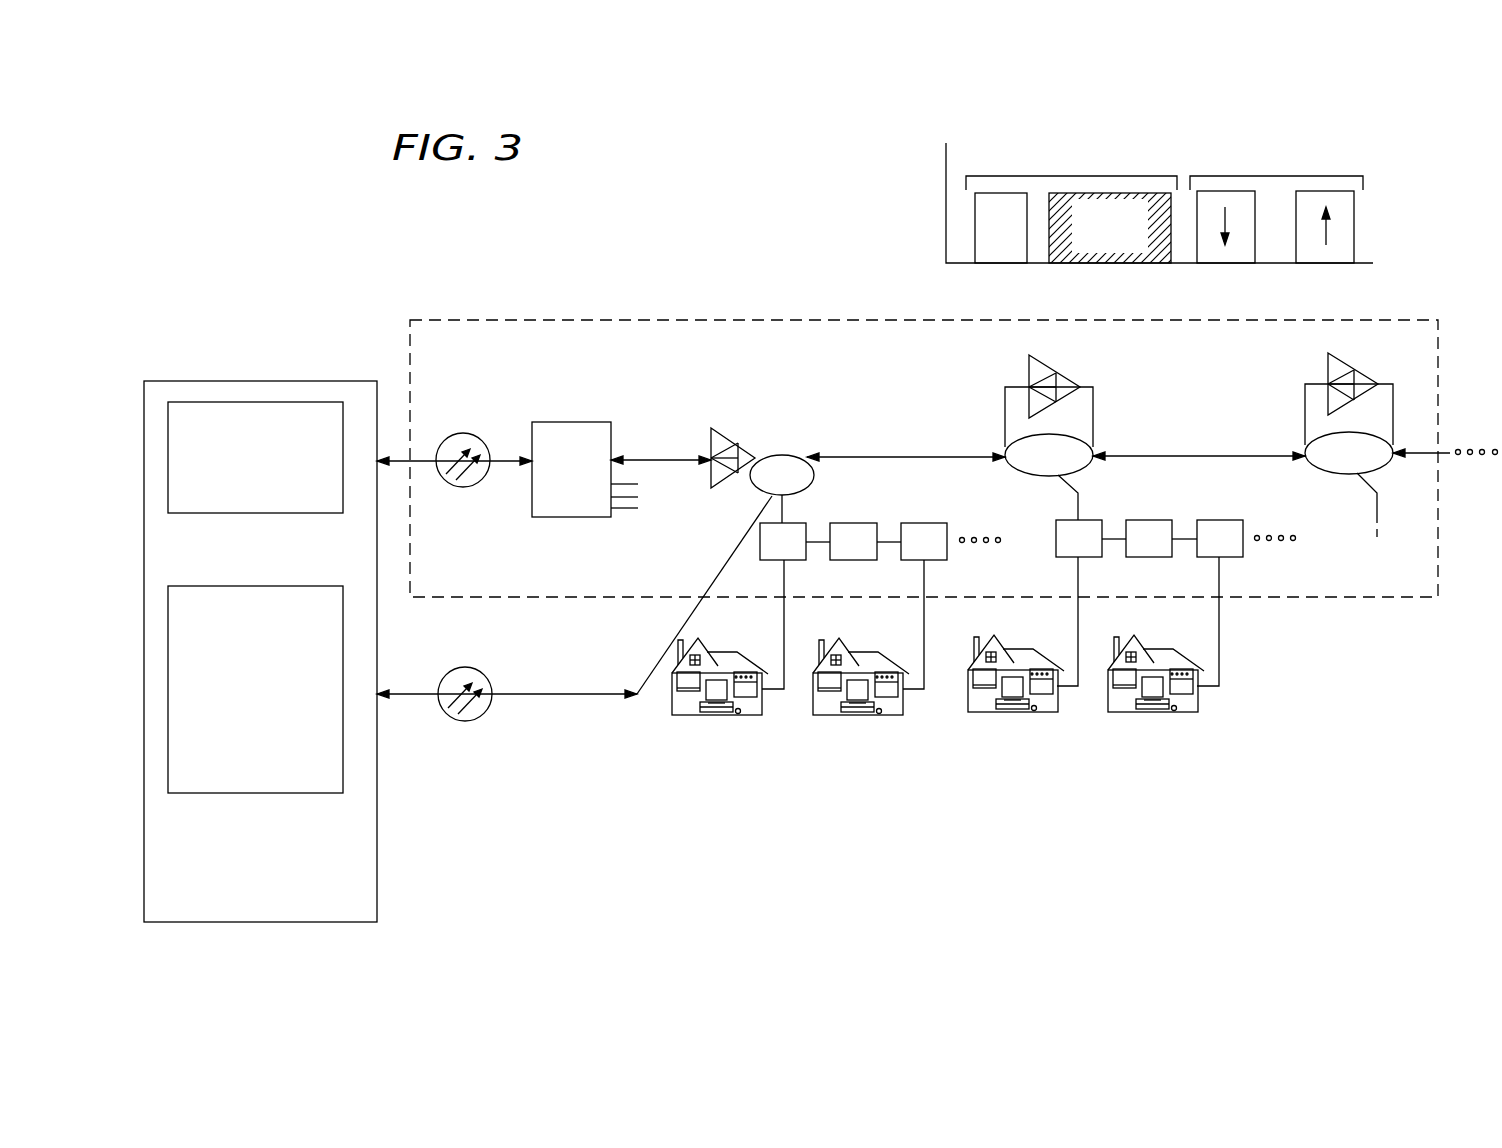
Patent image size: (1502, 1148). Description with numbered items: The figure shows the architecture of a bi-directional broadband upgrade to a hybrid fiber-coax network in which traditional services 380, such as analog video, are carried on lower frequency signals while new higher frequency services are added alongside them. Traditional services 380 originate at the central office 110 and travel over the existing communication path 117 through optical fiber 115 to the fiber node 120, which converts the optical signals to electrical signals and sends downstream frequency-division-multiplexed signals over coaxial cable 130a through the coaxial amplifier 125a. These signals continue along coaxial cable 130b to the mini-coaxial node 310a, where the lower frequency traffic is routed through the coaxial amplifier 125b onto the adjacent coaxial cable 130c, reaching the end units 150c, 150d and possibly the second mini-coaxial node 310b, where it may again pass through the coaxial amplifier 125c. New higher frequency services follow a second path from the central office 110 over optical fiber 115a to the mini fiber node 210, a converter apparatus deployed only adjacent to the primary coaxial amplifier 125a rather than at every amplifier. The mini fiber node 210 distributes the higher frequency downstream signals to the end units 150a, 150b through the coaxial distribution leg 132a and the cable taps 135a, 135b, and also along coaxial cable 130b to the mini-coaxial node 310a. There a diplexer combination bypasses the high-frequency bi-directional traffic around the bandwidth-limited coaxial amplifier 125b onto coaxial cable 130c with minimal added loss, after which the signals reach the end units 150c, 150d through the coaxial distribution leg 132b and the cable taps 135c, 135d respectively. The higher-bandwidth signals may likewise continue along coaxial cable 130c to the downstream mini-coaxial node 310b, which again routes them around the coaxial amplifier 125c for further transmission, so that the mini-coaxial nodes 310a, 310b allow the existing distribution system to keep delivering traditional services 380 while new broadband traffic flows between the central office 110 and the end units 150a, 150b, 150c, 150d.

The central office 110 is at (377, 888).
The optical fiber 115 is at (425, 462).
The optical fiber 115a is at (478, 670).
The communication path 117 is at (842, 322).
The fiber node 120 is at (577, 422).
The coaxial amplifier 125a is at (745, 445).
The coaxial amplifier 125b is at (1048, 363).
The coaxial amplifier 125c is at (1347, 362).
The coaxial cable 130a is at (678, 460).
The coaxial cable 130b is at (848, 455).
The coaxial cable 130c is at (1168, 450).
The coaxial distribution leg 132a is at (782, 512).
The coaxial distribution leg 132b is at (1078, 510).
The cable tap 135a is at (792, 560).
The cable tap 135b is at (933, 560).
The cable tap 135c is at (1087, 557).
The cable tap 135d is at (1228, 557).
The end unit 150a is at (755, 715).
The end unit 150b is at (888, 715).
The end unit 150c is at (980, 705).
The end unit 150d is at (1188, 713).
The mini fiber node 210 is at (752, 482).
The mini-coaxial node 310a is at (1008, 468).
The mini-coaxial node 310b is at (1308, 463).
The traditional services 380 is at (1167, 210).